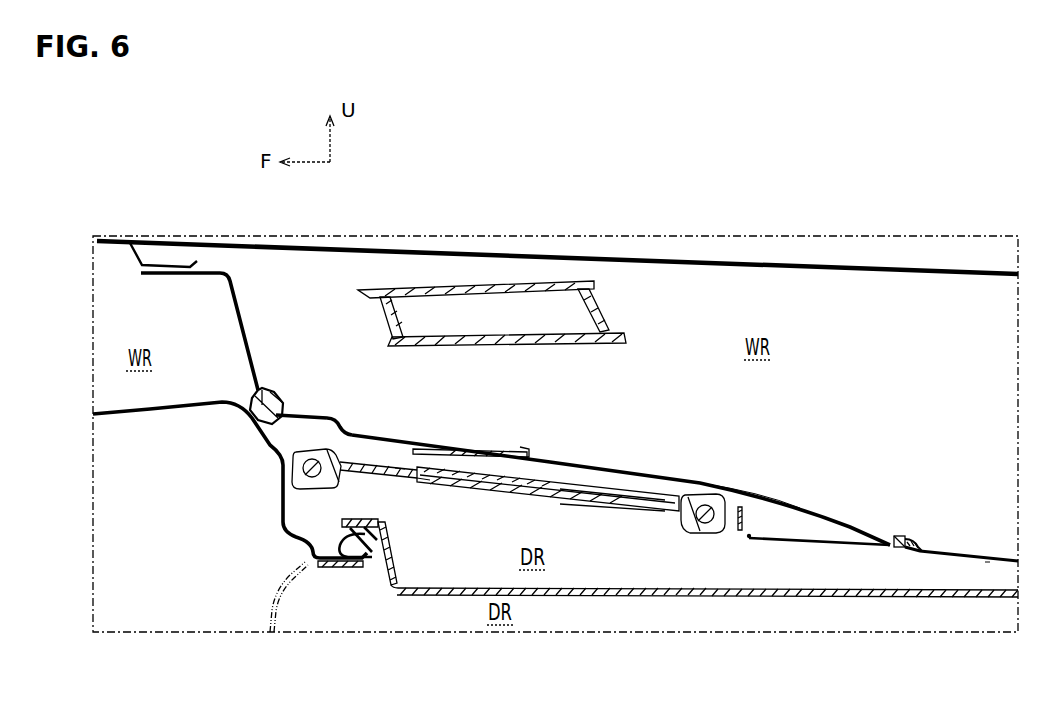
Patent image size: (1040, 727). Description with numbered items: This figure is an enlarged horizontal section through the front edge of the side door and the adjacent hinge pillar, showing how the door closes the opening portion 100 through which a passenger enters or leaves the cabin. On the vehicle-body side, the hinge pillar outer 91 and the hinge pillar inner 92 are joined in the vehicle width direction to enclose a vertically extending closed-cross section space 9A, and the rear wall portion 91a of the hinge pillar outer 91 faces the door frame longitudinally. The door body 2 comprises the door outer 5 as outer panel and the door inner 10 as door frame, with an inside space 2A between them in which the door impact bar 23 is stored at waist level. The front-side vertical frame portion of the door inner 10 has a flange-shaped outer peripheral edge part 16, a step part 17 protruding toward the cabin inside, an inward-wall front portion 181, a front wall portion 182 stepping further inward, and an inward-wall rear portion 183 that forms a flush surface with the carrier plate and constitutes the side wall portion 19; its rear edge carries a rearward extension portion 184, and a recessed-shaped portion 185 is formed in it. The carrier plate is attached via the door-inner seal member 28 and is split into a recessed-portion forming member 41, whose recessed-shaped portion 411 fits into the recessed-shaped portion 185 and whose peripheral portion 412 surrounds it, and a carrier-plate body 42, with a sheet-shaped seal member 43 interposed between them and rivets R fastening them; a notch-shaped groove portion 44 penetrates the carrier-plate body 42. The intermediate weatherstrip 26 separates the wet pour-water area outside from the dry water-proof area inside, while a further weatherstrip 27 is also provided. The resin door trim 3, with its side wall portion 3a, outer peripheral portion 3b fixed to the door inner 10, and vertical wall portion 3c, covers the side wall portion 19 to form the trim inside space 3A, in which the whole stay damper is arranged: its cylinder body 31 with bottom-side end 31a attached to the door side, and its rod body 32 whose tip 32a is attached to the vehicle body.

The door body 2 is at (583, 198).
The door outer 5 is at (452, 238).
The outer peripheral edge part 16 is at (173, 280).
The step part 17 is at (243, 345).
The intermediate weatherstrip 26 is at (247, 412).
The inward-wall front portion 181 is at (308, 416).
The front wall portion 182 is at (329, 418).
The inward-wall rear portion 183 is at (397, 470).
The rearward extension portion 184 is at (517, 442).
The recessed-shaped portion 185 is at (400, 478).
The door-inner seal member 28 is at (504, 448).
The rod body 32 is at (378, 466).
The tip 32a is at (292, 467).
The cylinder body 31 is at (628, 512).
The bottom-side end 31a is at (703, 540).
The recessed-portion forming member 41 is at (798, 502).
The recessed-shaped portion 411 is at (743, 486).
The peripheral portion 412 is at (905, 538).
The carrier-plate body 42 is at (970, 559).
The sheet-shaped seal member 43 is at (921, 548).
The notch-shaped groove portion 44 is at (741, 532).
The door inner 10 is at (792, 548).
The side wall portion 19 is at (987, 568).
The rivets R is at (897, 557).
The hinge pillar outer 91 is at (130, 415).
The rear wall portion 91a is at (282, 496).
The hinge pillar inner 92 is at (280, 588).
The closed-cross section space 9A is at (170, 558).
The door trim 3 is at (838, 598).
The side wall portion 3a is at (453, 596).
The outer peripheral portion 3b is at (357, 520).
The vertical wall portion 3c is at (388, 553).
The trim inside space 3A is at (869, 585).
The weatherstrip 27 is at (373, 561).
The door impact bar 23 is at (550, 343).
The opening portion 100 is at (592, 624).
The inside space 2A is at (897, 360).